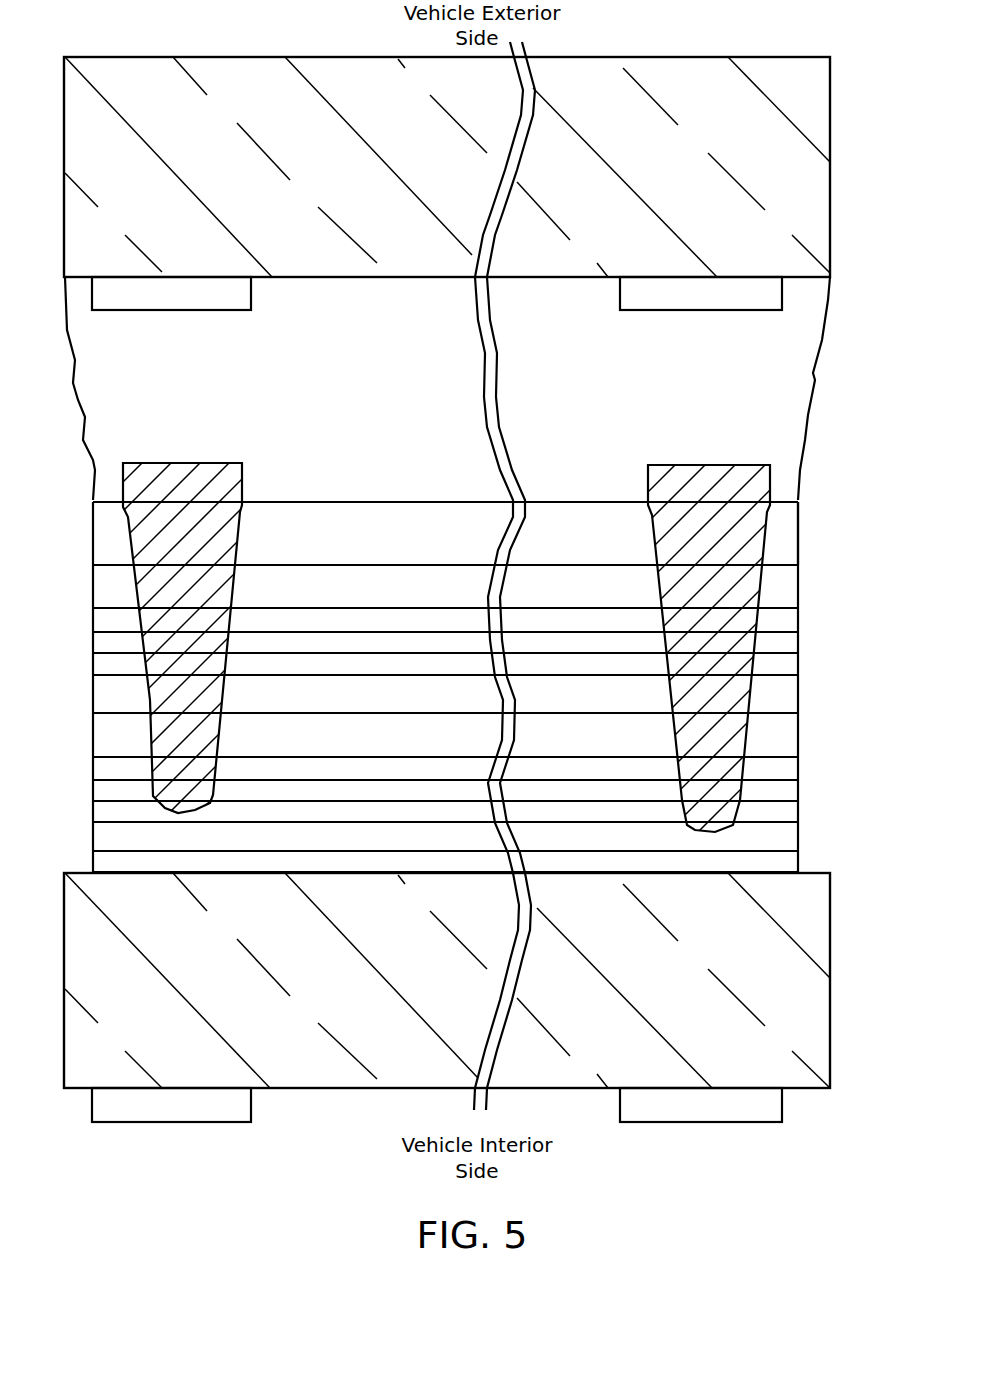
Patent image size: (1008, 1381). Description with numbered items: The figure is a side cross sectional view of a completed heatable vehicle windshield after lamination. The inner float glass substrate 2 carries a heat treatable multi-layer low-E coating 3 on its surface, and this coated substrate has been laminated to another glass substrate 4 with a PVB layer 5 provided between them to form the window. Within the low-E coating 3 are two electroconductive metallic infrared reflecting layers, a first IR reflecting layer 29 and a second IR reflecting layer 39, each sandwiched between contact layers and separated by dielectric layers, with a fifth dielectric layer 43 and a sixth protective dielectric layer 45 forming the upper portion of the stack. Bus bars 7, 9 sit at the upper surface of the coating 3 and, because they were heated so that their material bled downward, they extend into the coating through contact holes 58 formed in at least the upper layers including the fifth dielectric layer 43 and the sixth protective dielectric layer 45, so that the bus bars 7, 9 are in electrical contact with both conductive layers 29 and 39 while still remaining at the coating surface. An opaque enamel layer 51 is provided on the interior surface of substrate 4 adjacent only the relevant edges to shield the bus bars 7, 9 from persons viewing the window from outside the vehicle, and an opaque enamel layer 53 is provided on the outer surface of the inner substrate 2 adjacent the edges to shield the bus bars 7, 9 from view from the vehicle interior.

The glass substrate 2 is at (818, 985).
The low-E coating 3 is at (473, 684).
The glass substrate 4 is at (820, 128).
The PVB layer 5 is at (795, 417).
The bus bar 7 is at (190, 485).
The bus bar 9 is at (740, 470).
The first electroconductive metallic infrared reflecting layer 29 is at (445, 859).
The second electroconductive metallic infrared reflecting layer 39 is at (568, 647).
The fifth dielectric layer 43 is at (288, 590).
The sixth protective dielectric layer 45 is at (273, 518).
The opaque enamel layer 51 is at (185, 311).
The opaque enamel layer 53 is at (178, 1122).
The contact hole 58 is at (757, 551).